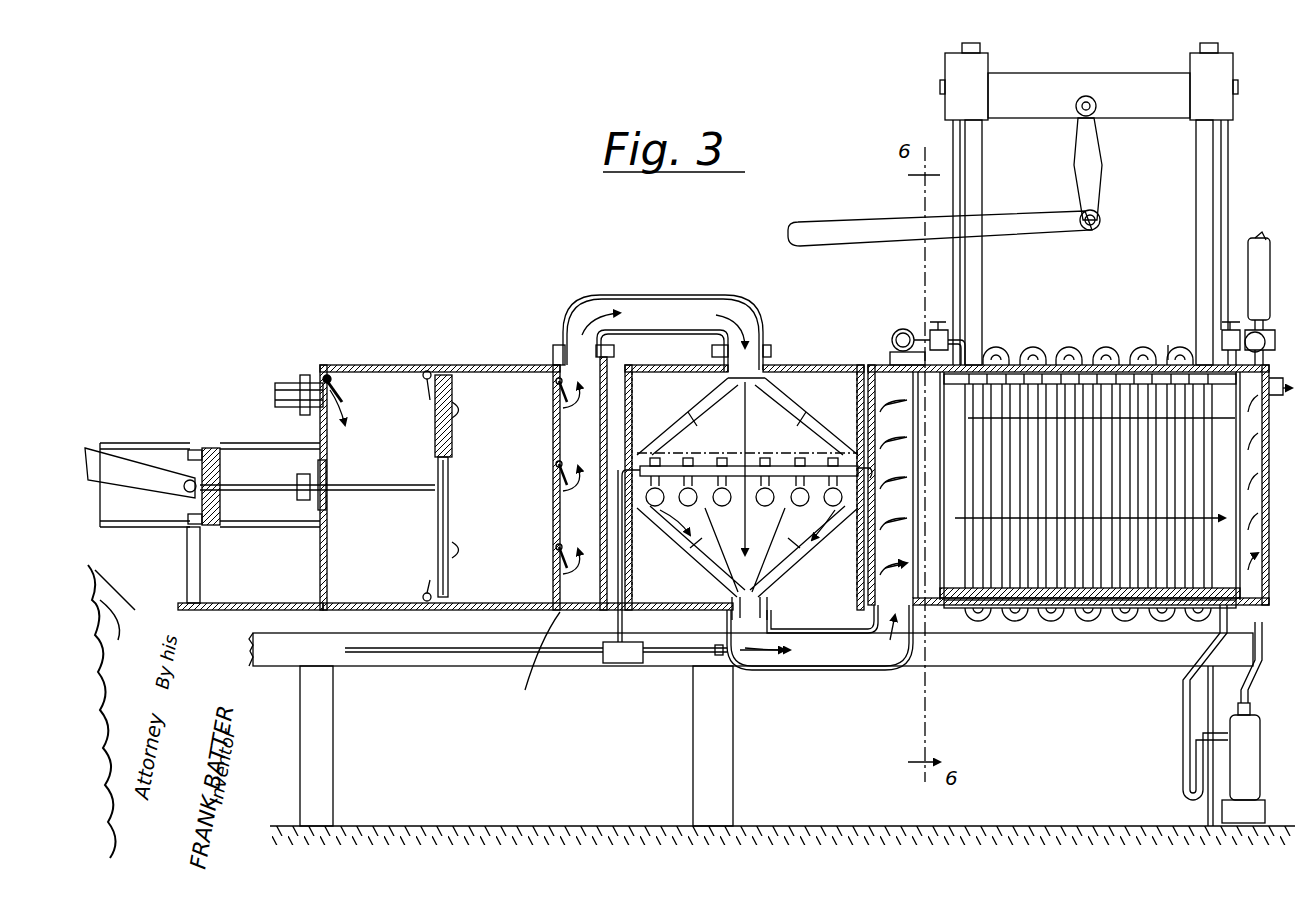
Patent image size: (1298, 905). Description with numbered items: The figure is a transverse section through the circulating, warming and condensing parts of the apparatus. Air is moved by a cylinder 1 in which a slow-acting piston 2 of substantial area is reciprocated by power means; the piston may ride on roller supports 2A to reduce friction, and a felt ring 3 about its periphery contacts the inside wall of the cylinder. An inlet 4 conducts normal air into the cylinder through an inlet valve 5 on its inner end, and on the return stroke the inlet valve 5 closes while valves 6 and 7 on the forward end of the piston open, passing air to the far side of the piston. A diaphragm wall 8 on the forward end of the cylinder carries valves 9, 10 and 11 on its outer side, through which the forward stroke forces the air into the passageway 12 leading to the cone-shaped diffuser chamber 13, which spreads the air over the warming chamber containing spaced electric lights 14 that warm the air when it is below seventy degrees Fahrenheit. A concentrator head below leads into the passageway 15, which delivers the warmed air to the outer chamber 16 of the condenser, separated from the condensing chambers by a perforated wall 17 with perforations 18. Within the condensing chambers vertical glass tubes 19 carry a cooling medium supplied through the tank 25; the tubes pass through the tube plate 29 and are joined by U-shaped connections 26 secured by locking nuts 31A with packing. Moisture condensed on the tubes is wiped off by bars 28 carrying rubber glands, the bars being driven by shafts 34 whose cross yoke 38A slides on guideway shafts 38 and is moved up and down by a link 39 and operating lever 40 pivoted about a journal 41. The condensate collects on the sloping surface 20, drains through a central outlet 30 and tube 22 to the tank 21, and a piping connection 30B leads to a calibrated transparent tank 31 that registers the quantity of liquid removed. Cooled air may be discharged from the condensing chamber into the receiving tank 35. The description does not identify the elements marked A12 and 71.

The cylinder 1 is at (398, 365).
The piston 2 is at (452, 380).
The roller supports 2A is at (418, 693).
The piston ring 3 is at (440, 375).
The inlet 4 is at (300, 382).
The inlet valve 5 is at (335, 380).
The valve 6 is at (462, 550).
The valve 7 is at (462, 410).
The diaphragm wall 8 is at (573, 541).
The valve 9 is at (525, 690).
The valve 10 is at (555, 480).
The valve 11 is at (563, 395).
The passageway 12 is at (660, 296).
The hood A12 is at (838, 366).
The diffuser chamber 13 is at (748, 398).
The electric lights 14 is at (808, 540).
The passageway 15 is at (825, 660).
The outer chamber 16 is at (893, 610).
The perforated wall 17 is at (985, 390).
The perforations 18 is at (915, 400).
The condensing tubes 19 is at (1132, 345).
The sloping surface 20 is at (1030, 630).
The tank 21 is at (1245, 762).
The piping connections 22 is at (1182, 705).
The tank 25 is at (1258, 236).
The U shaped connections 26 is at (980, 625).
The bar 28 is at (1168, 345).
The tube plate 29 is at (993, 365).
The central outlet 30 is at (1226, 694).
The piping connection 30B is at (1260, 665).
The calibrated transparent tank 31 is at (1197, 692).
The locking nut 31A is at (1000, 680).
The shaft 34 is at (962, 275).
The receiving tank 35 is at (1253, 474).
The guideway shafts 38 is at (978, 188).
The cross yoke 38A is at (1050, 80).
The link 39 is at (1090, 158).
The operating lever 40 is at (995, 216).
The journal 41 is at (743, 236).
The operating lever 71 is at (128, 465).